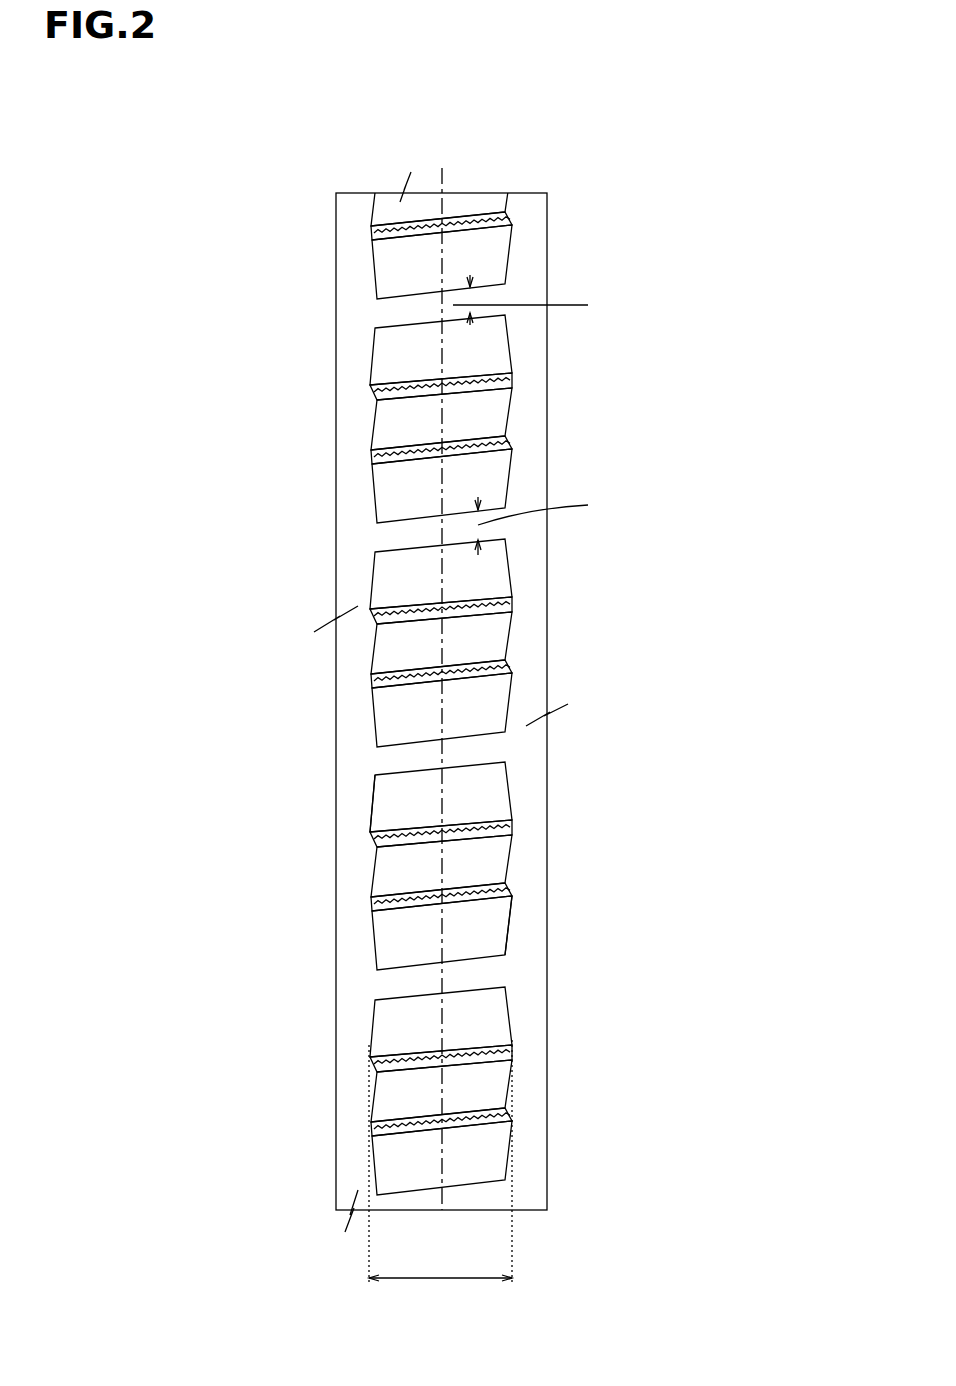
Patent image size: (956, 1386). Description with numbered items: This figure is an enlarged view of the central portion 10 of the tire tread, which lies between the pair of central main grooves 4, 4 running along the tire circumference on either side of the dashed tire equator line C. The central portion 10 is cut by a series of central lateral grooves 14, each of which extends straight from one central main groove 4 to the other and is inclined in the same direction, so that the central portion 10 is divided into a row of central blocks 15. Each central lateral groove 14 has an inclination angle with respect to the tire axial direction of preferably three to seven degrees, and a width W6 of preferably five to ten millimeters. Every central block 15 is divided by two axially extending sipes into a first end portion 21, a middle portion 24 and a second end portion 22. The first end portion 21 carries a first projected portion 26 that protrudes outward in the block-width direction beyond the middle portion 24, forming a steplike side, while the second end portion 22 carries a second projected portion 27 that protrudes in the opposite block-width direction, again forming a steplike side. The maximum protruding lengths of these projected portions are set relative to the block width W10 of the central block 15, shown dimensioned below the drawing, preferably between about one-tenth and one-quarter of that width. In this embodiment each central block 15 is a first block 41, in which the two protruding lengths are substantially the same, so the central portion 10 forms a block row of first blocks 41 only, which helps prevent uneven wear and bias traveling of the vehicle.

The central main groove 4 is at (353, 230).
The central portion 10 is at (466, 262).
The central lateral groove 14 is at (420, 305).
The central block 15 is at (537, 643).
The first block 41 is at (458, 412).
The first end portion 21 is at (477, 800).
The middle portion 24 is at (477, 865).
The second end portion 22 is at (500, 932).
The first projected portion 26 is at (383, 802).
The second projected portion 27 is at (507, 940).
The tire equator C is at (441, 674).
The width of central lateral groove W6 is at (558, 506).
The block width W10 is at (440, 1175).